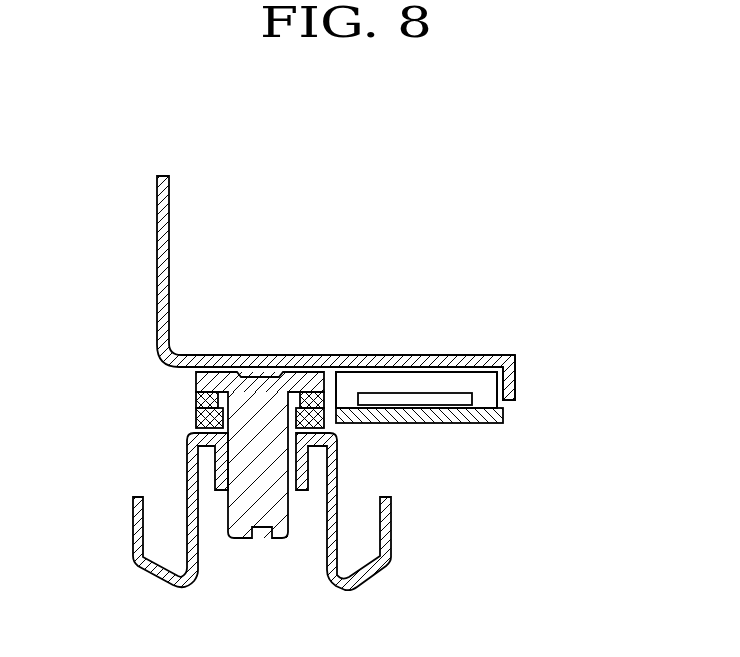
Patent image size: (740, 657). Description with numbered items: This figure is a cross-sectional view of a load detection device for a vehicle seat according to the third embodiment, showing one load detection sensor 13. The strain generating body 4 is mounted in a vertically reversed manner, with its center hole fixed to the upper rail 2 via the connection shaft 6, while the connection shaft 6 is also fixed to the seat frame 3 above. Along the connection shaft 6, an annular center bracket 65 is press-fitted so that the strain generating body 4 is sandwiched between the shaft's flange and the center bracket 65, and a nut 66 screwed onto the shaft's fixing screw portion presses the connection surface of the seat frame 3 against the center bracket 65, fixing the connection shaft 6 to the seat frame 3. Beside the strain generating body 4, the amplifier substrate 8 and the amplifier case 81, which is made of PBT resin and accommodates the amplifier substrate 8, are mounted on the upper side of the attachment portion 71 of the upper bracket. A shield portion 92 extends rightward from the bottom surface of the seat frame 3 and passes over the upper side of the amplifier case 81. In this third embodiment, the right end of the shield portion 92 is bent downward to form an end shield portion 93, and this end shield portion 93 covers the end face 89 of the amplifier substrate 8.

The load detection sensor 13 is at (370, 328).
The seat frame 3 is at (158, 293).
The strain generating body 4 is at (196, 398).
The center bracket 65 is at (197, 420).
The nut 66 is at (222, 470).
The connection shaft 6 is at (277, 490).
The upper rail 2 is at (393, 543).
The amplifier case 81 is at (482, 378).
The shield portion 92 is at (445, 352).
The amplifier substrate 8 is at (430, 399).
The end face 89 is at (472, 402).
The attachment portion 71 is at (480, 418).
The end shield portion 93 is at (515, 386).